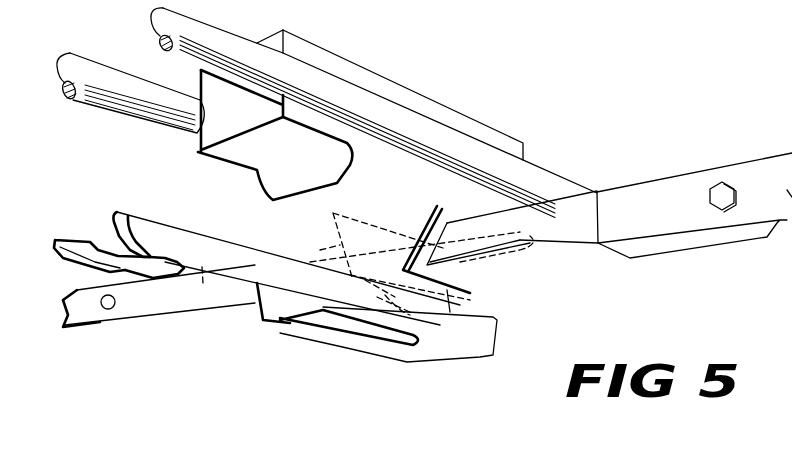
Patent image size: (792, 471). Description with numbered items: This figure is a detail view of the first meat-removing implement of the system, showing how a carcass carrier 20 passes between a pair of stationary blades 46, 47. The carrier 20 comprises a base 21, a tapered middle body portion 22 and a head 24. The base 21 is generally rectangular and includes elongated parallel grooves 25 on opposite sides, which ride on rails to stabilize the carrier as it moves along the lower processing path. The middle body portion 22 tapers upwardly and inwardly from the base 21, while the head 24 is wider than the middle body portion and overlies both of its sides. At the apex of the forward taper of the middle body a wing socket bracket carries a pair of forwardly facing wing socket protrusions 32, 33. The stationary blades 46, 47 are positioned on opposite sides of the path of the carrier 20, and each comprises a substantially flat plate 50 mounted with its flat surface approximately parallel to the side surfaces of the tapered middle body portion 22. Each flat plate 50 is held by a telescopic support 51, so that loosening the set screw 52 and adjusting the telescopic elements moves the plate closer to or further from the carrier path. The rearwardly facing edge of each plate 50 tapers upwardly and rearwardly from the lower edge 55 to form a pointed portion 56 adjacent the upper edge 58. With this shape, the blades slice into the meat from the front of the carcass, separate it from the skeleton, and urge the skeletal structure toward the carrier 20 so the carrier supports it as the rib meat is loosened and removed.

The carcass carrier 20 is at (497, 132).
The base 21 is at (330, 62).
The tapered middle body portion 22 is at (245, 215).
The head 24 is at (330, 343).
The elongated parallel grooves 25 is at (208, 113).
The wing socket protrusion 32 is at (57, 238).
The wing socket protrusion 33 is at (127, 220).
The stationary blade 46 is at (493, 283).
The stationary blade 47 is at (411, 313).
The flat plate 50 is at (333, 233).
The telescopic support 51 is at (187, 315).
The set screw 52 is at (110, 306).
The lower edge 55 is at (412, 313).
The pointed portion 56 is at (455, 252).
The upper edge 58 is at (440, 200).